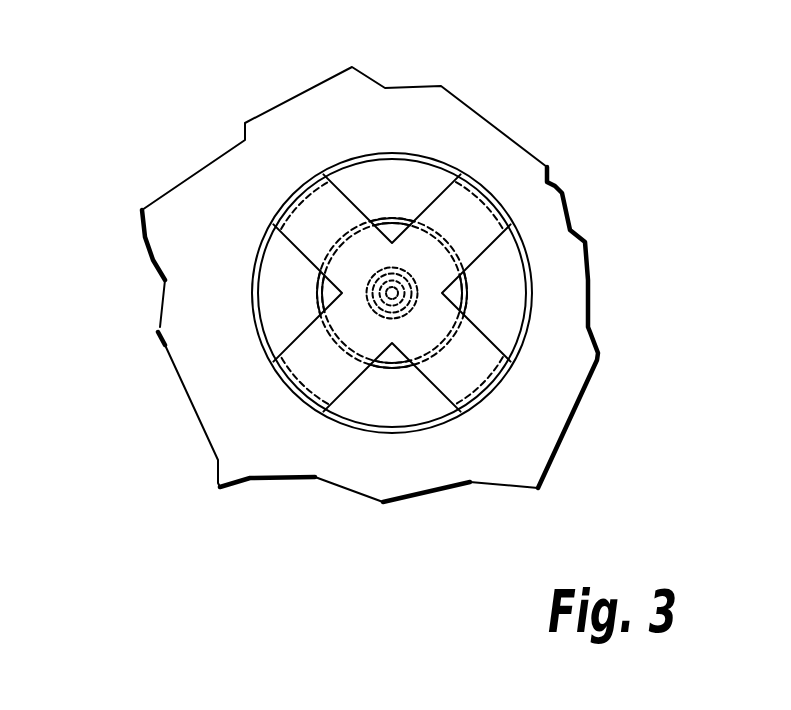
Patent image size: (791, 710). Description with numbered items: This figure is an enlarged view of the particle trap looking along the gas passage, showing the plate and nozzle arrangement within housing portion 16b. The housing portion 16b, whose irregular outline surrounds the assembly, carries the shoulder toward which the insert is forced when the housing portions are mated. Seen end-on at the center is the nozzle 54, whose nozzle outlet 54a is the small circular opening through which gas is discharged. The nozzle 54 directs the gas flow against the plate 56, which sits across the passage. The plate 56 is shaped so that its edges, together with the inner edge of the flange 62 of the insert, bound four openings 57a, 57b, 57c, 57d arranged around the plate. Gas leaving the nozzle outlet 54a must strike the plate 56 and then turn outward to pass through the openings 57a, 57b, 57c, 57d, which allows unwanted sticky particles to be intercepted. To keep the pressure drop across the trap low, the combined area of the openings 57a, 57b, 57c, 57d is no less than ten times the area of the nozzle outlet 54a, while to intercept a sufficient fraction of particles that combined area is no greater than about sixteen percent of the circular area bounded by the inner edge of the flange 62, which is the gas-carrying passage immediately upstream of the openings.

The housing portion 16b is at (256, 202).
The flange 62 is at (273, 267).
The plate 56 is at (307, 377).
The nozzle 54 is at (397, 279).
The nozzle outlet 54a is at (393, 292).
The opening 57a is at (443, 293).
The opening 57b is at (338, 292).
The opening 57c is at (393, 232).
The opening 57d is at (393, 350).